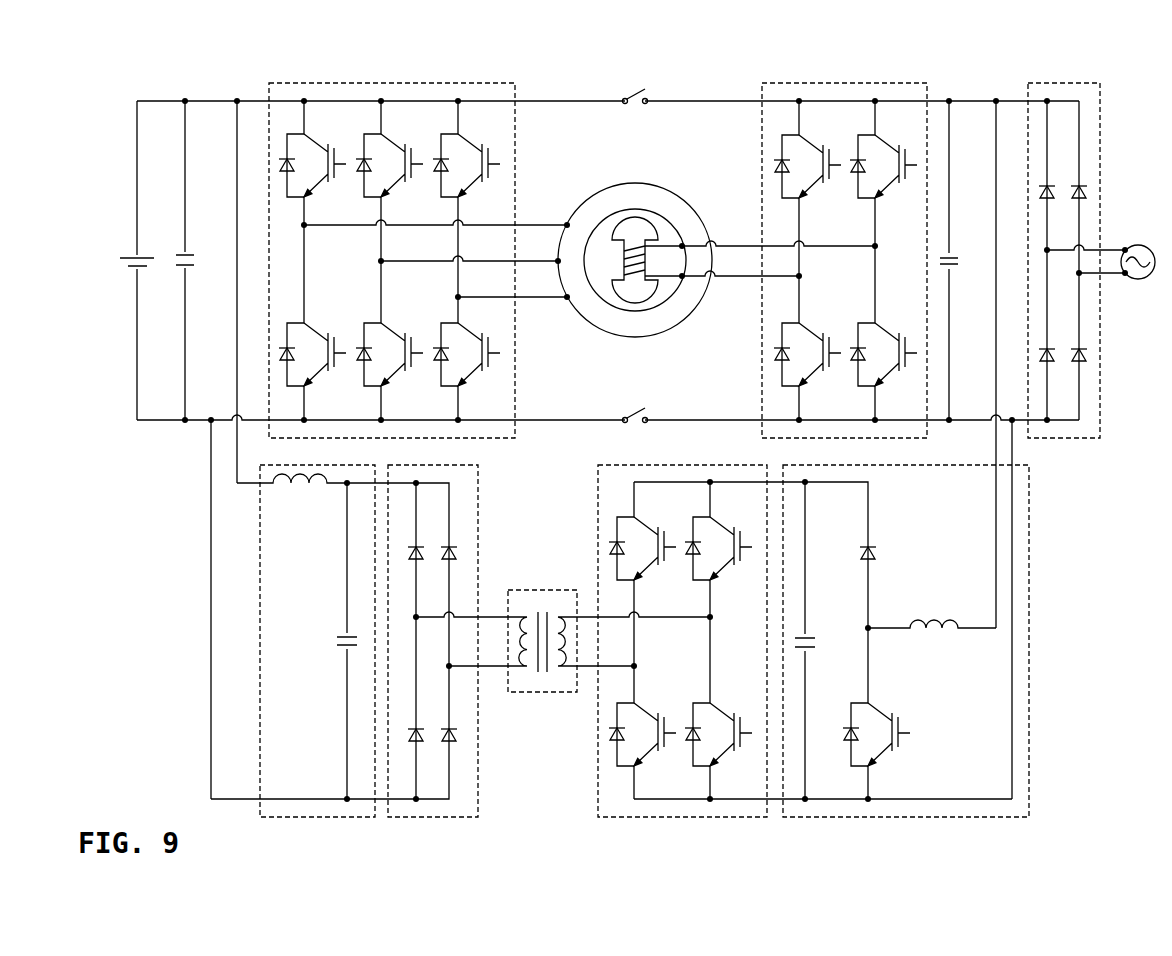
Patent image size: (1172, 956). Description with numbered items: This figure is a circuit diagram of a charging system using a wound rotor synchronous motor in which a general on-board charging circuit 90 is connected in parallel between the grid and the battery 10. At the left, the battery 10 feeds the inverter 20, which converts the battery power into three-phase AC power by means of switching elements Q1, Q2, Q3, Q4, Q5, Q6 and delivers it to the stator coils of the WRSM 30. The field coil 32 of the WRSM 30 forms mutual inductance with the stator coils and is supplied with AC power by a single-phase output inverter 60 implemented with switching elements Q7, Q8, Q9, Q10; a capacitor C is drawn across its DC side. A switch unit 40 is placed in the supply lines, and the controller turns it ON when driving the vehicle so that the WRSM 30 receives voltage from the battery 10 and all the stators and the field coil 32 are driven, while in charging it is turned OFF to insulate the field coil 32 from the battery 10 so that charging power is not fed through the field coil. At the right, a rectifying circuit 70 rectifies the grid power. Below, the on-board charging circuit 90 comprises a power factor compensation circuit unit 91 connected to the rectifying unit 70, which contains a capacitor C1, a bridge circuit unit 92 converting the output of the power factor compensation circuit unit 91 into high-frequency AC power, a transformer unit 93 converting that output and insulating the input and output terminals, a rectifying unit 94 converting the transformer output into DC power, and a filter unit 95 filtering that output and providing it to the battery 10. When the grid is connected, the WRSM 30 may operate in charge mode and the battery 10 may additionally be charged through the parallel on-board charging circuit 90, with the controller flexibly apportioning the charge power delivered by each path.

The battery 10 is at (133, 258).
The inverter 20 is at (392, 232).
The WRSM 30 is at (635, 222).
The field coil 32 is at (633, 245).
The switch unit 40 is at (631, 84).
The single-phase output inverter 60 is at (844, 233).
The rectifying circuit 70 is at (1060, 83).
The on-board charging circuit 90 is at (646, 641).
The power factor compensation circuit unit 91 is at (938, 641).
The bridge circuit unit 92 is at (598, 780).
The transformer unit 93 is at (540, 590).
The rectifying unit 94 is at (480, 715).
The filter unit 95 is at (260, 640).
The switching element Q1 is at (312, 172).
The switching element Q2 is at (312, 360).
The switching element Q3 is at (389, 172).
The switching element Q4 is at (389, 360).
The switching element Q5 is at (466, 172).
The switching element Q6 is at (466, 360).
The switching element Q7 is at (883, 173).
The switching element Q8 is at (807, 360).
The switching element Q9 is at (883, 360).
The switching element Q10 is at (810, 173).
The capacitor C is at (955, 260).
The capacitor C1 is at (815, 640).